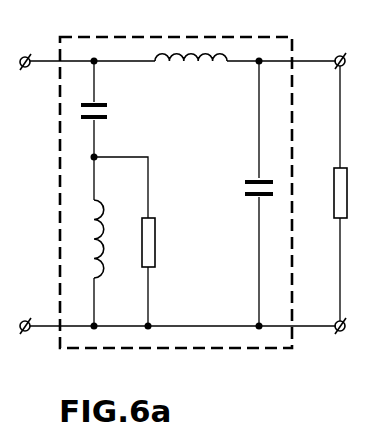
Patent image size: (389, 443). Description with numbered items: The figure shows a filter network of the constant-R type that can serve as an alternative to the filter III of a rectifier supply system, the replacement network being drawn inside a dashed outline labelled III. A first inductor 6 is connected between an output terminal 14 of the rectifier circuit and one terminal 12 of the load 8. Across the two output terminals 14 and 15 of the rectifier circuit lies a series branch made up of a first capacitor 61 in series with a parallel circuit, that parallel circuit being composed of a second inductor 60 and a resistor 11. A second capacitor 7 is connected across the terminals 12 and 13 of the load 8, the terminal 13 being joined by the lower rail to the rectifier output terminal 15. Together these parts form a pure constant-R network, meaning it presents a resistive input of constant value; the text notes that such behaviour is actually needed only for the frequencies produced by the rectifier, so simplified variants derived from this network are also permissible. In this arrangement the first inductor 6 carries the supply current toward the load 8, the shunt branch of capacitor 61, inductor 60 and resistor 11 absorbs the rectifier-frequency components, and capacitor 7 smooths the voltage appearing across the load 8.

The filter III is at (127, 351).
The first inductor 6 is at (196, 58).
The second capacitor 7 is at (251, 197).
The load 8 is at (334, 188).
The resistor 11 is at (155, 240).
The terminal of the load 12 is at (337, 55).
The terminal of the load 13 is at (341, 333).
The output terminal of the rectifier circuit 14 is at (30, 68).
The output terminal of the rectifier circuit 15 is at (28, 319).
The second inductor 60 is at (103, 236).
The first capacitor 61 is at (102, 123).